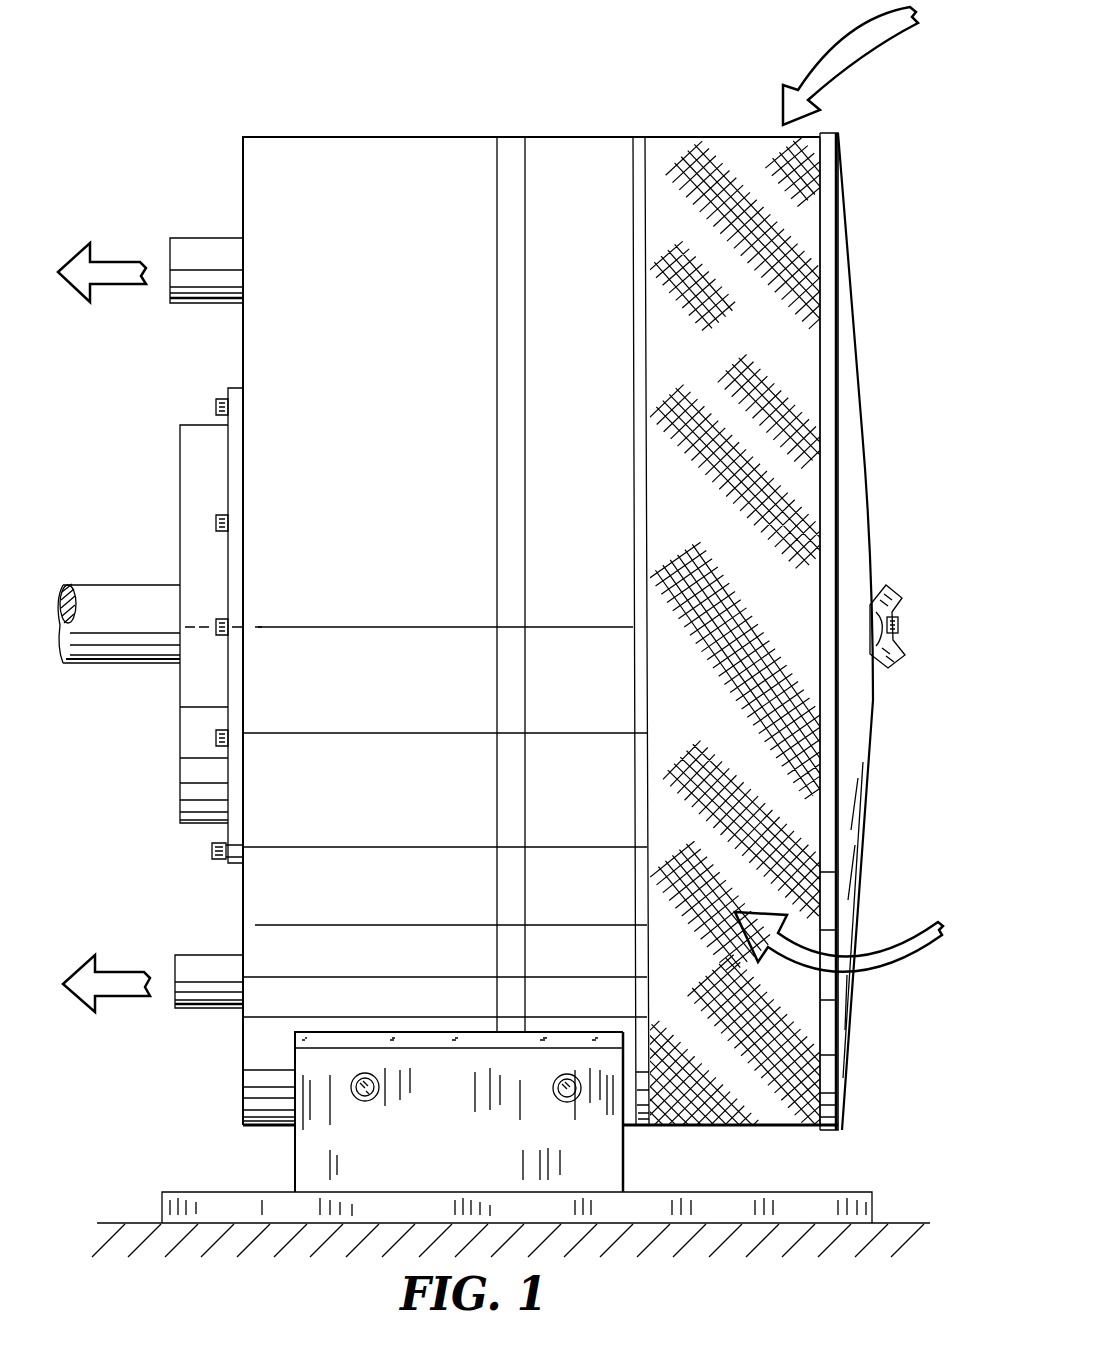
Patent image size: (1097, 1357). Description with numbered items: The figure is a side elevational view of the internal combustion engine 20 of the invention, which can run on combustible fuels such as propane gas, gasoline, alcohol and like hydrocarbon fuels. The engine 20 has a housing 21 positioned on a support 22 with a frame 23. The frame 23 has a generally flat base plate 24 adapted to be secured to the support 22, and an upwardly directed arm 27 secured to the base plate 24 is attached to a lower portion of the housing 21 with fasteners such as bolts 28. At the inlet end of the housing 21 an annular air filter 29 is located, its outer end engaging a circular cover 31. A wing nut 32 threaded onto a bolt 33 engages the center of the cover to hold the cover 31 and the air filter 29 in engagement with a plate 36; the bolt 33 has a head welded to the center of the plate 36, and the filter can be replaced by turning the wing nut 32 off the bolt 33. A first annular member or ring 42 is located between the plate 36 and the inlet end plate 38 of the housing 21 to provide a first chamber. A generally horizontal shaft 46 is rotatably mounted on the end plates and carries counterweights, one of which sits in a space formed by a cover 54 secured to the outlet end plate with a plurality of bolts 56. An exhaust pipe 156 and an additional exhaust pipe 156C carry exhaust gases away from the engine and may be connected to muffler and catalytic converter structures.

The internal combustion engine 20 is at (682, 75).
The housing 21 is at (540, 598).
The support 22 is at (121, 1235).
The frame 23 is at (441, 1112).
The base plate 24 is at (789, 1202).
The arm 27 is at (608, 1162).
The bolts 28 is at (355, 1108).
The annular air filter 29 is at (719, 150).
The circular cover 31 is at (855, 305).
The wing nut 32 is at (885, 598).
The bolt 33 is at (898, 625).
The plate 36 is at (643, 147).
The inlet end plate 38 is at (510, 150).
The first annular member 42 is at (580, 150).
The shaft 46 is at (108, 598).
The cover 54 is at (180, 452).
The bolts 56 is at (216, 851).
The exhaust pipe 156 is at (198, 248).
The additional exhaust pipe 156C is at (195, 1015).